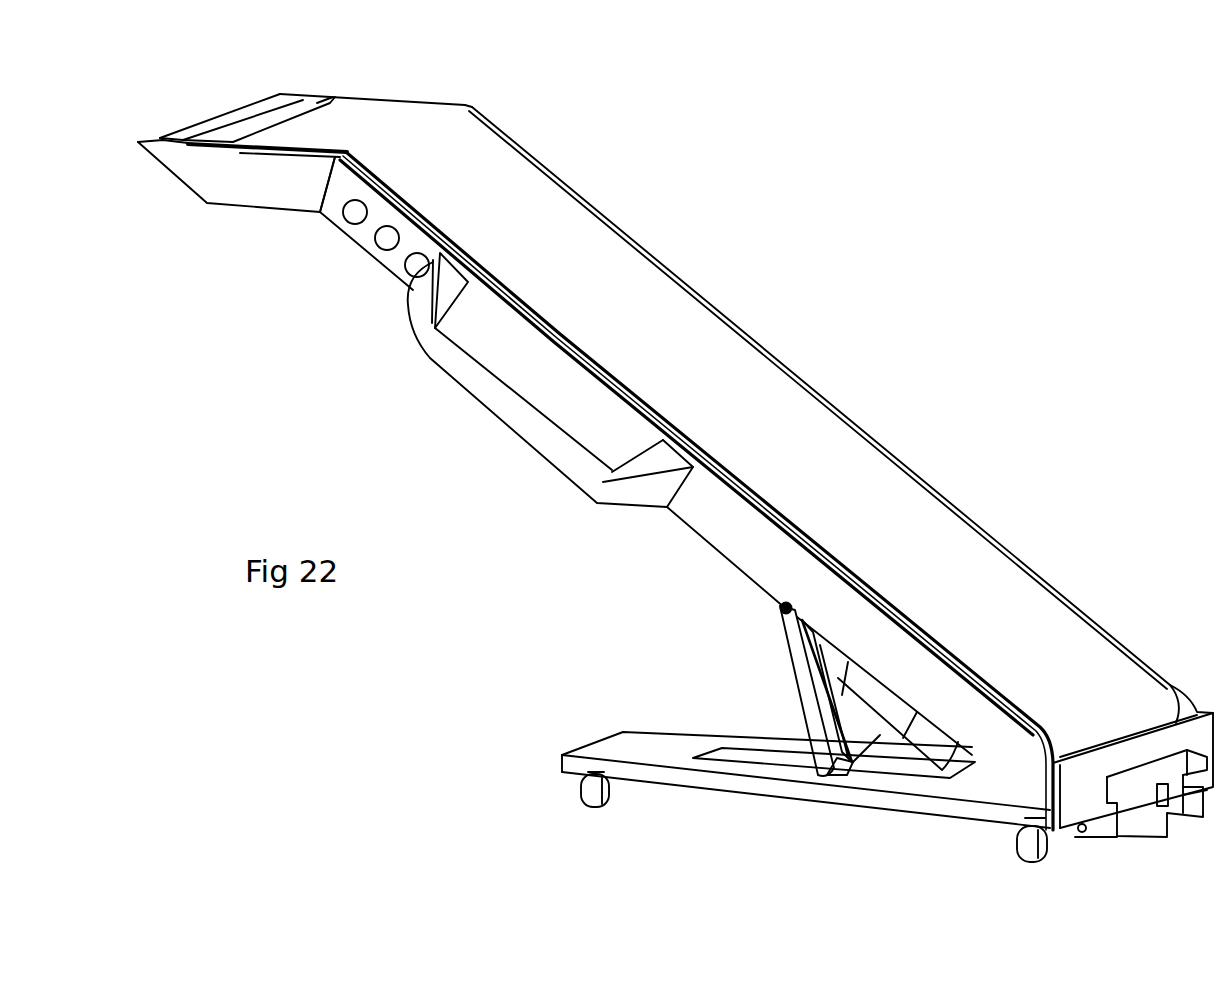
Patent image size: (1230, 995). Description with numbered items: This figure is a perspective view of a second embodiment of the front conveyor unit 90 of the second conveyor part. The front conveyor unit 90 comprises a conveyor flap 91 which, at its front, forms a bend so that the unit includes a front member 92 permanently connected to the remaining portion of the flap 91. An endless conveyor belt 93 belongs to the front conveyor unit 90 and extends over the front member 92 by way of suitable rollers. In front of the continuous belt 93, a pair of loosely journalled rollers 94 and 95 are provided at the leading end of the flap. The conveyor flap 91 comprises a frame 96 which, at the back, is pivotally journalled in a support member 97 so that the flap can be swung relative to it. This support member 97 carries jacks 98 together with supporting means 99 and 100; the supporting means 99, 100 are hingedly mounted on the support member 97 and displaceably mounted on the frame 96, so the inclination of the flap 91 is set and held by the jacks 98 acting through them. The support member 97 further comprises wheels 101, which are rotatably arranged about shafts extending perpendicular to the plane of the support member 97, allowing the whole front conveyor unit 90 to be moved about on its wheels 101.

The front conveyor unit 90 is at (918, 476).
The conveyor flap 91 is at (958, 552).
The front member 92 is at (263, 205).
The endless conveyor belt 93 is at (777, 413).
The loosely journalled roller 94 is at (255, 117).
The loosely journalled roller 95 is at (199, 127).
The frame 96 is at (723, 527).
The support member 97 is at (673, 758).
The jack 98 is at (880, 752).
The supporting means 99 is at (803, 740).
The supporting means 100 is at (892, 717).
The wheels 101 is at (587, 790).